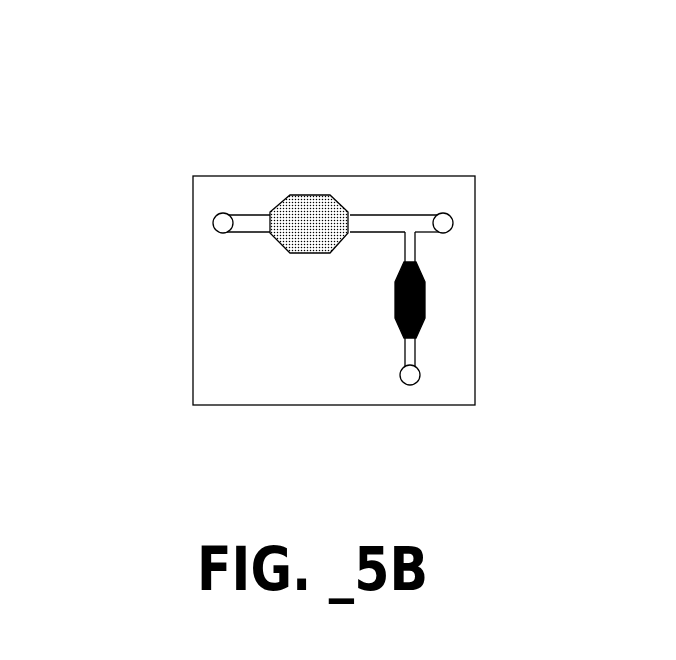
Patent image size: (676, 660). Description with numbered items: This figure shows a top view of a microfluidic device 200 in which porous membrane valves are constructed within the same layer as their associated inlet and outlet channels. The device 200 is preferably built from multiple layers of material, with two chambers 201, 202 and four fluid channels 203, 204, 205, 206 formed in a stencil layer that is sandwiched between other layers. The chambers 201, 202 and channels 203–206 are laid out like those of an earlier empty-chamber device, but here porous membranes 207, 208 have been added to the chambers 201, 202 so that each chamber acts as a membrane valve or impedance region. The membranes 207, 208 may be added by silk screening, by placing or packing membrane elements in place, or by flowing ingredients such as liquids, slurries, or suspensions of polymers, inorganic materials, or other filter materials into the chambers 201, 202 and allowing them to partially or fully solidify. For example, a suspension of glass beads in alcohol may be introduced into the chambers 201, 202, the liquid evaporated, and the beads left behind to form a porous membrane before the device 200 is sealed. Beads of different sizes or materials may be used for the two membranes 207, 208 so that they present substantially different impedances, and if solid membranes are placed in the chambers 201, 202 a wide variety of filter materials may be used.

The microfluidic device 200 is at (132, 90).
The chamber 201 is at (425, 315).
The chamber 202 is at (317, 196).
The channel 203 is at (262, 233).
The channel 204 is at (372, 233).
The channel 205 is at (400, 248).
The channel 206 is at (398, 353).
The porous membrane 207 is at (425, 280).
The porous membrane 208 is at (320, 223).